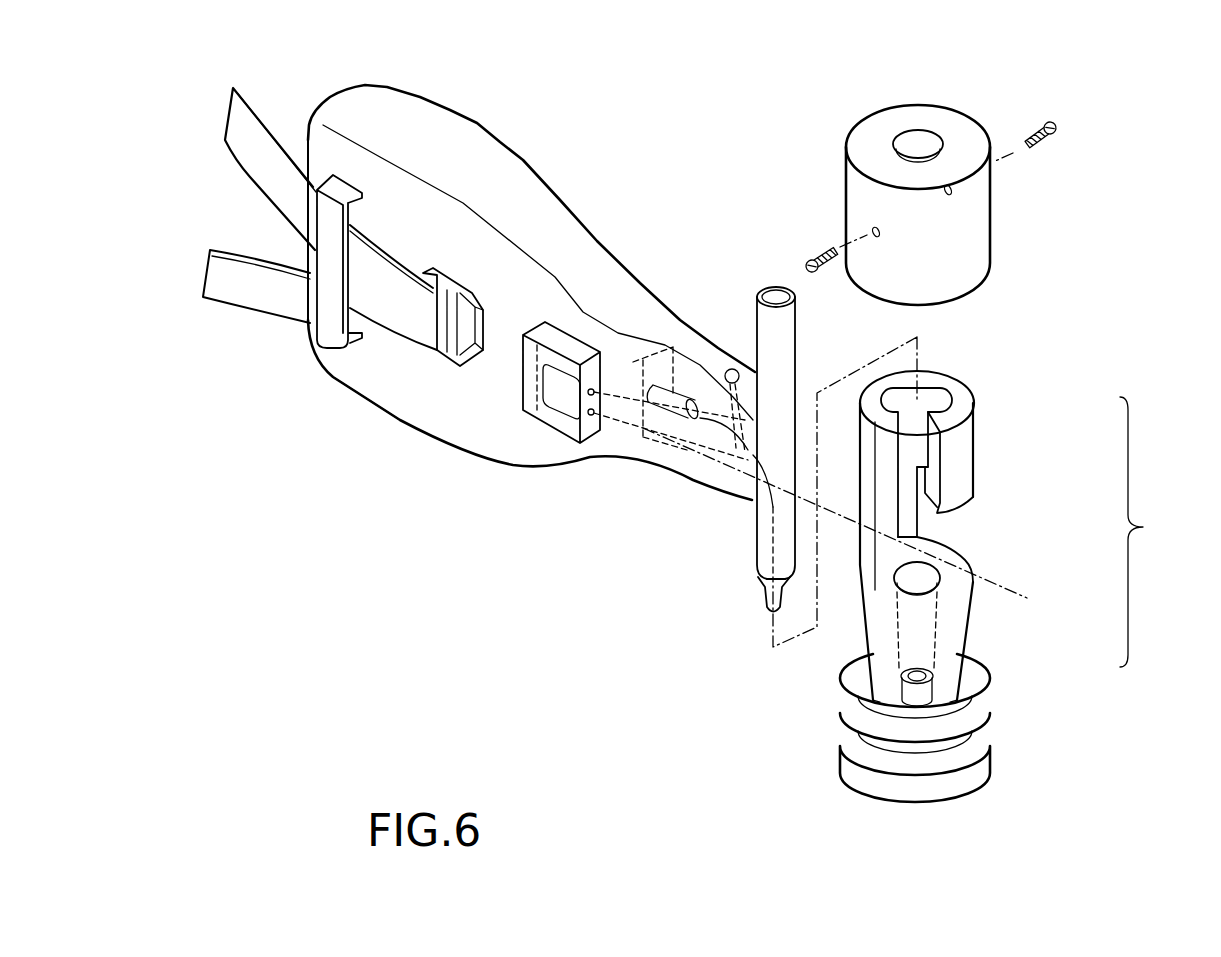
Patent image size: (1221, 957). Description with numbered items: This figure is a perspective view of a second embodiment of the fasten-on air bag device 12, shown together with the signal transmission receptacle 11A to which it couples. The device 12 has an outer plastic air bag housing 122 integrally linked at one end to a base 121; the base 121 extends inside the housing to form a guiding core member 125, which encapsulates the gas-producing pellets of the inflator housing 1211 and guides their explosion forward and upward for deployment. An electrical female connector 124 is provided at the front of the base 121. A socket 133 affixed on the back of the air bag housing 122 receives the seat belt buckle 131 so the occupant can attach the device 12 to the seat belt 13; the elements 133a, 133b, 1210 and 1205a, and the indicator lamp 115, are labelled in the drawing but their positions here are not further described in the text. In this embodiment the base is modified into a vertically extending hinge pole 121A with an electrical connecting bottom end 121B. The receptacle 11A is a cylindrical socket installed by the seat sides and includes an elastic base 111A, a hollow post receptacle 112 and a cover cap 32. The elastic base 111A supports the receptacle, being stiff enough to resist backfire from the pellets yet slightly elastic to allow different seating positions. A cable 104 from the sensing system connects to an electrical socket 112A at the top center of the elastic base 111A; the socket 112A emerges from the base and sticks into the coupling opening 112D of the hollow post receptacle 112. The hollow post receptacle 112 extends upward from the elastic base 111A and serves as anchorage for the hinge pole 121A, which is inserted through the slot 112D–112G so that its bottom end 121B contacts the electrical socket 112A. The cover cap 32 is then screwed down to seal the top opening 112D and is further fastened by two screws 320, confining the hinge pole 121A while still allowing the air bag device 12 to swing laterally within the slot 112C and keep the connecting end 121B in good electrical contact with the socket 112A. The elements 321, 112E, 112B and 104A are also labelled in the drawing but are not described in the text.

The fasten-on air bag device 12 is at (478, 122).
The air bag housing 122 is at (525, 157).
The base 121 is at (660, 303).
The electrical female connector 124 is at (383, 387).
The seat belt 13 is at (245, 128).
The guiding core member 125 is at (303, 362).
The seat belt buckle 131 is at (457, 367).
The socket 133 is at (567, 345).
The plate hole 133a is at (591, 395).
The plate hole 133b is at (592, 415).
The inflator housing 1211 is at (648, 397).
The slot 1210 is at (688, 412).
The indicator lamp 115 is at (732, 368).
The hinge pole 121A is at (784, 327).
The electrical connecting bottom end 121B is at (767, 603).
The hidden bore 1205a is at (773, 523).
The cover cap 32 is at (983, 238).
The cap hole 321 is at (928, 140).
The screws 320 is at (1040, 143).
The hollow post receptacle 112 is at (1033, 535).
The coupling opening 112D is at (933, 397).
The side wall segment 112E is at (968, 448).
The slot 112G is at (913, 442).
The slot 112C is at (933, 523).
The bore opening 104A is at (993, 581).
The cable 104 is at (935, 665).
The conical portion 112B is at (883, 638).
The electrical socket 112A is at (927, 707).
The elastic base 111A is at (967, 725).
The signal transmission receptacle 11A is at (957, 799).